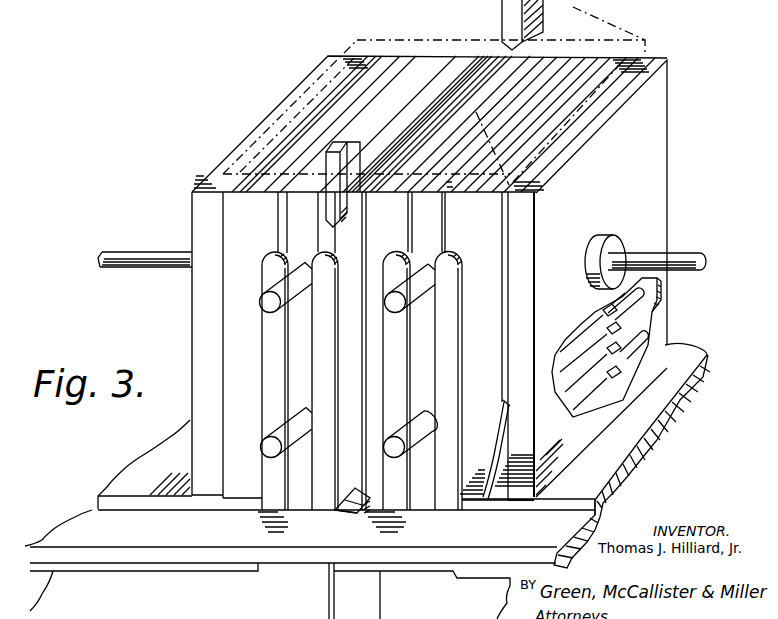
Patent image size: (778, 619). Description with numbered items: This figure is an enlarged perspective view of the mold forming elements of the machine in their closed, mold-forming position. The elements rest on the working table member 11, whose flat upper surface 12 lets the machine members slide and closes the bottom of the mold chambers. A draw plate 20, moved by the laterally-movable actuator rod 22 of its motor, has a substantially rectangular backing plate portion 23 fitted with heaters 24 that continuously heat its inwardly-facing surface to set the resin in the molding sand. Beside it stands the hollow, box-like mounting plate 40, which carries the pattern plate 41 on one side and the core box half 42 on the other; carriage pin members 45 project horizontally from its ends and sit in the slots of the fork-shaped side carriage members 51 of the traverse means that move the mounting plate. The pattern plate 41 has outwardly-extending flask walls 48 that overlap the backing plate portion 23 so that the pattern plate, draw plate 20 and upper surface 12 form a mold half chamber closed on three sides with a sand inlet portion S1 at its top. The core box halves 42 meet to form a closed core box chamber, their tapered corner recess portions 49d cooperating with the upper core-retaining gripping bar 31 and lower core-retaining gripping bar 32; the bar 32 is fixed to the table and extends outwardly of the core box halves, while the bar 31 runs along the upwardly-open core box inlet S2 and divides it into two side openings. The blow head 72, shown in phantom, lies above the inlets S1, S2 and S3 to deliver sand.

The working table member 11 is at (620, 491).
The upper surface 12 is at (623, 465).
The draw plate 20 is at (668, 142).
The actuator rod 22 is at (147, 252).
The backing plate portion 23 is at (513, 447).
The heaters 24 is at (665, 306).
The upper core-retaining gripping bar 31 is at (323, 224).
The lower core-retaining gripping bar 32 is at (358, 512).
The mounting plate 40 is at (455, 48).
The pattern plate 41 is at (427, 53).
The core box half 42 is at (473, 54).
The carriage pin members 45 is at (430, 295).
The flask walls 48 is at (507, 402).
The corner recess portions 49d is at (368, 493).
The side carriage members 51 is at (458, 356).
The blow head 72 is at (387, 26).
The sand inlet portion S1 is at (562, 108).
The core box inlet S2 is at (397, 193).
The inlet S3 is at (390, 58).